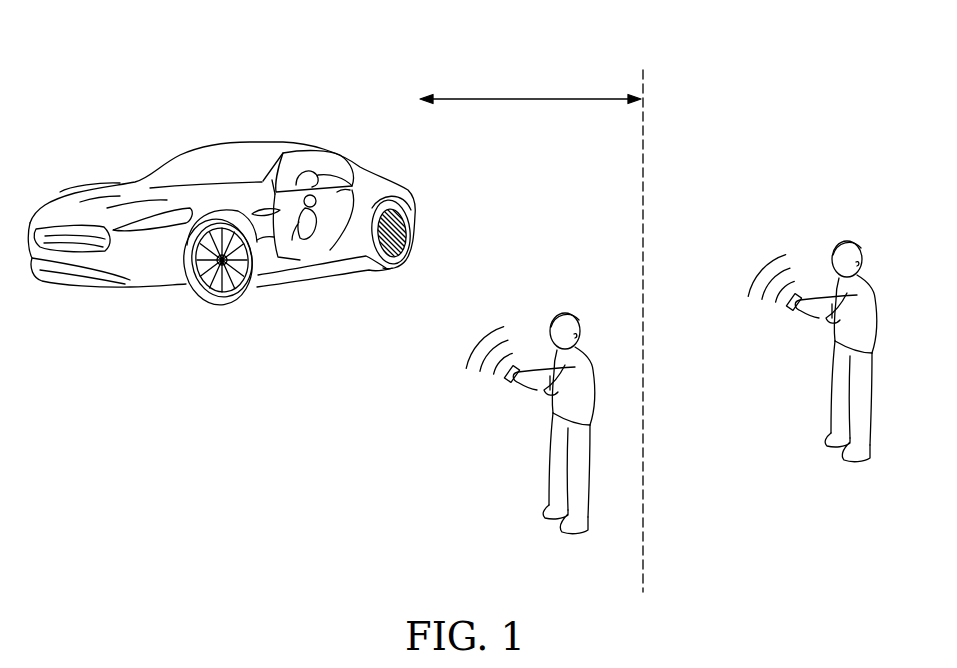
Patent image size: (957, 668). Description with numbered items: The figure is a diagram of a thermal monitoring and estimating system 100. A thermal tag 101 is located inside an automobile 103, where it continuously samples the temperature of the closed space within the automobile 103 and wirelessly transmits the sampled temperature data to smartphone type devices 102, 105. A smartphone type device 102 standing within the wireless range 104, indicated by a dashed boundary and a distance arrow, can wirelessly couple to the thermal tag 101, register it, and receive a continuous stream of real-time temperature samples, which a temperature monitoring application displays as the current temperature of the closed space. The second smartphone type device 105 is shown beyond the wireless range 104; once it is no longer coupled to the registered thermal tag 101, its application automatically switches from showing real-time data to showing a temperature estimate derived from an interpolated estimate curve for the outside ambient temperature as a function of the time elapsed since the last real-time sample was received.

The thermal monitoring and estimating system 100 is at (862, 124).
The thermal tag 101 is at (300, 240).
The smartphone type device 102 is at (506, 385).
The automobile 103 is at (181, 151).
The wireless range 104 is at (647, 77).
The smartphone type device 105 is at (787, 313).